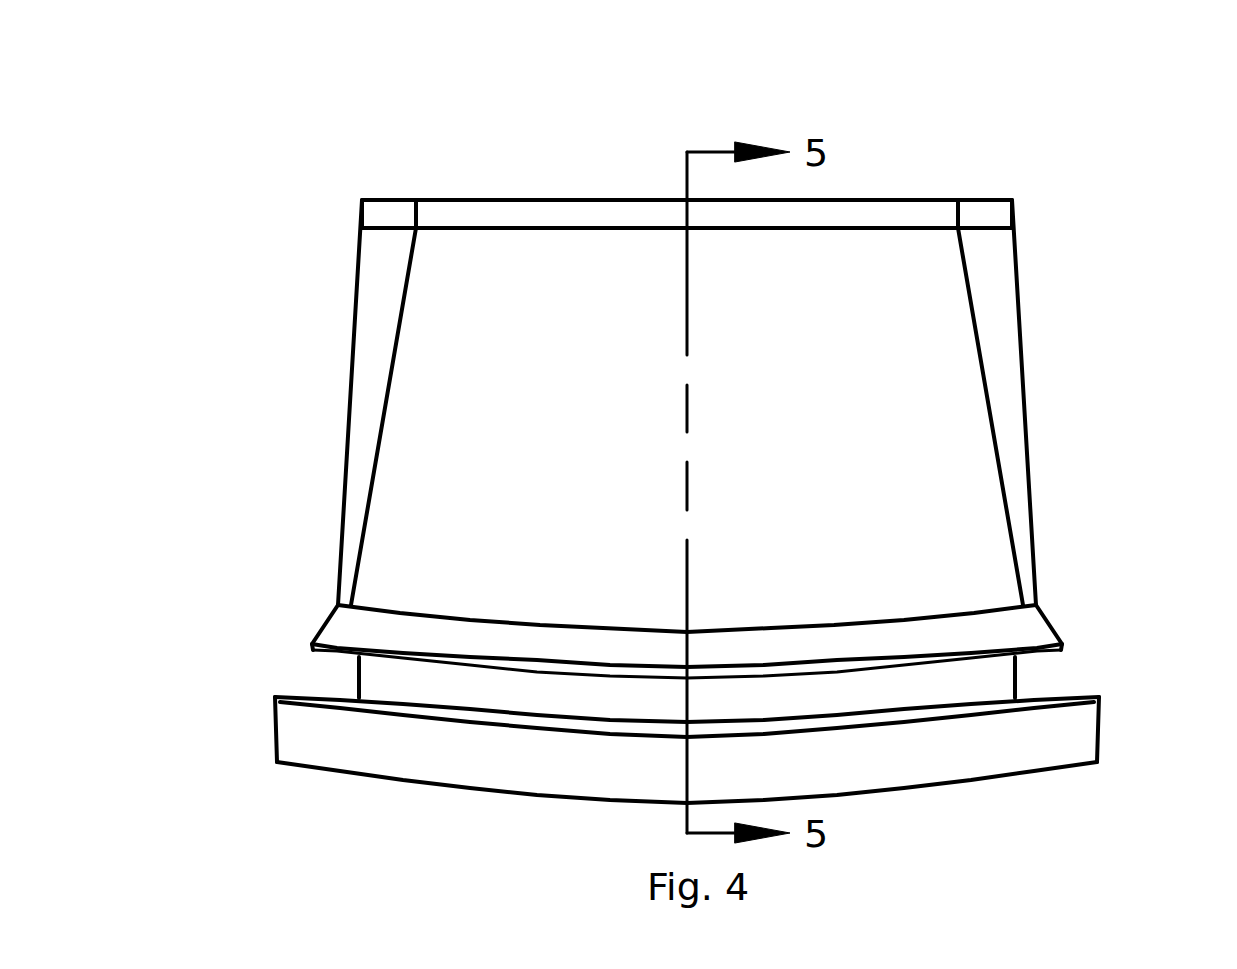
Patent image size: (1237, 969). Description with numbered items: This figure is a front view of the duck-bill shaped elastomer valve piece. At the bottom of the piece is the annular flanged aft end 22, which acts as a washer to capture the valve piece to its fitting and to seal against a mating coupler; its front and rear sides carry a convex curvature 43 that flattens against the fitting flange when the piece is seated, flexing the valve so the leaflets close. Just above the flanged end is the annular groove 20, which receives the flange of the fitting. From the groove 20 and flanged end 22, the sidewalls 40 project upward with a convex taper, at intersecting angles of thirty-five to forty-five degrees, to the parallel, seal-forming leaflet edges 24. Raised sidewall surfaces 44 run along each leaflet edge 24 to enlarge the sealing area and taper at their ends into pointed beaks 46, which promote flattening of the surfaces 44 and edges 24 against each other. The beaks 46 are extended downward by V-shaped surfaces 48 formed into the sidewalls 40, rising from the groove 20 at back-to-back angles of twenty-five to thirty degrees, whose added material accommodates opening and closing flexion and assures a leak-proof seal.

The annular groove 20 is at (1040, 672).
The aft surface 22 is at (1102, 743).
The leaflet edges 24 is at (483, 200).
The sidewalls 40 is at (517, 467).
The convex curvature 43 is at (422, 787).
The raised sidewall surfaces 44 is at (878, 212).
The beak 46 is at (382, 213).
The sidewall surfaces 48 is at (373, 300).